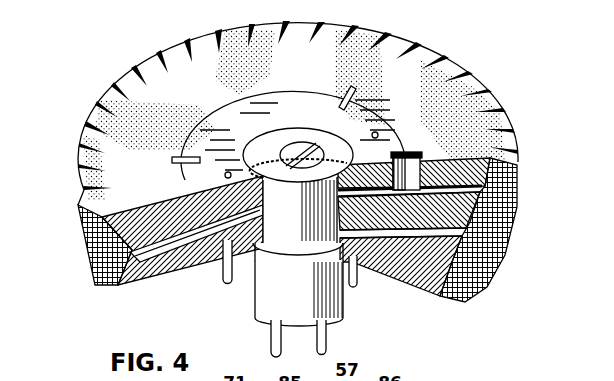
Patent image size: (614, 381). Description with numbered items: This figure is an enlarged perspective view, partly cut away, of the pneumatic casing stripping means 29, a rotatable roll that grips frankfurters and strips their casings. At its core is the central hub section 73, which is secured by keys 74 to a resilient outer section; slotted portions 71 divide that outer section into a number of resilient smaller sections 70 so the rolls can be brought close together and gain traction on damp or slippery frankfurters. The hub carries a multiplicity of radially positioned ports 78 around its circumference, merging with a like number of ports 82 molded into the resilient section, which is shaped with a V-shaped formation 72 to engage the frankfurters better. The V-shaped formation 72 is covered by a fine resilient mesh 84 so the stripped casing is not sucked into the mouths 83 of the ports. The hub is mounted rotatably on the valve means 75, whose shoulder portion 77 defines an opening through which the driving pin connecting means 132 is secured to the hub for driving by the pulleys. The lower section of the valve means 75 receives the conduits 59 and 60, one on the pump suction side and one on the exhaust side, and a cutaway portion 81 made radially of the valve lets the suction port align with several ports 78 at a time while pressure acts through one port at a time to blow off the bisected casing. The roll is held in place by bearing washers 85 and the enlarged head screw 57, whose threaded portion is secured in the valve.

The pneumatic stripping means 29 is at (473, 80).
The resilient smaller sections 70 is at (497, 102).
The slotted portions 71 is at (513, 133).
The V-shaped formation 72 is at (78, 255).
The central hub section 73 is at (414, 156).
The keys 74 is at (342, 94).
The valve means 75 is at (267, 300).
The shoulder portion 77 is at (255, 268).
The ports 78 is at (355, 287).
The cutaway portion 81 is at (297, 225).
The ports 82 is at (408, 292).
The mouths 83 is at (147, 275).
The resilient mesh 84 is at (520, 217).
The bearing washers 85 is at (295, 132).
The enlarged head screw 57 is at (283, 148).
The conduit 59 is at (328, 343).
The conduit 60 is at (272, 343).
The driving pin connecting means 132 is at (225, 176).